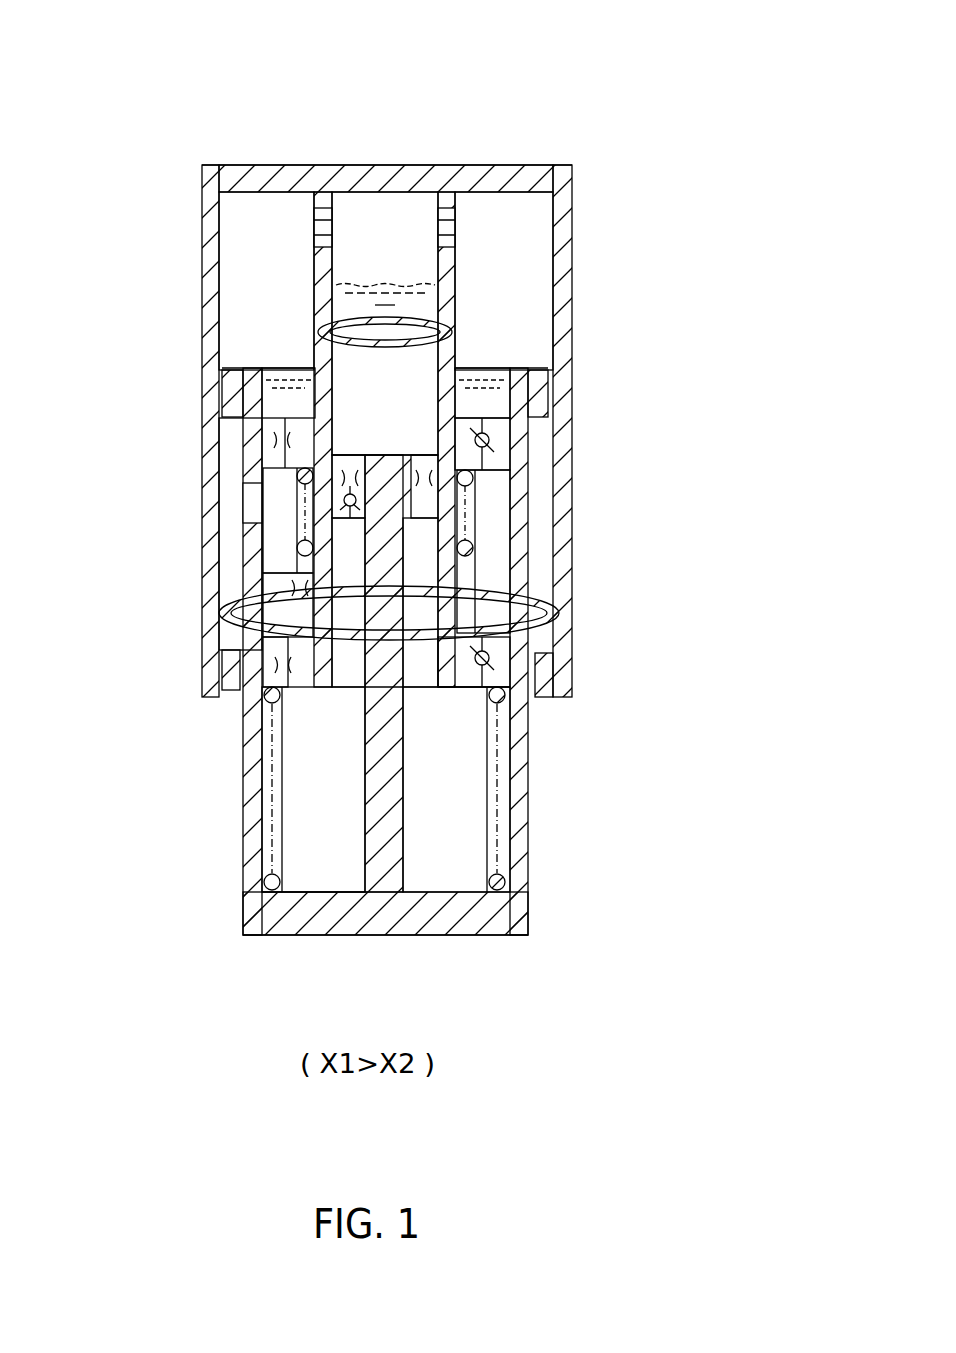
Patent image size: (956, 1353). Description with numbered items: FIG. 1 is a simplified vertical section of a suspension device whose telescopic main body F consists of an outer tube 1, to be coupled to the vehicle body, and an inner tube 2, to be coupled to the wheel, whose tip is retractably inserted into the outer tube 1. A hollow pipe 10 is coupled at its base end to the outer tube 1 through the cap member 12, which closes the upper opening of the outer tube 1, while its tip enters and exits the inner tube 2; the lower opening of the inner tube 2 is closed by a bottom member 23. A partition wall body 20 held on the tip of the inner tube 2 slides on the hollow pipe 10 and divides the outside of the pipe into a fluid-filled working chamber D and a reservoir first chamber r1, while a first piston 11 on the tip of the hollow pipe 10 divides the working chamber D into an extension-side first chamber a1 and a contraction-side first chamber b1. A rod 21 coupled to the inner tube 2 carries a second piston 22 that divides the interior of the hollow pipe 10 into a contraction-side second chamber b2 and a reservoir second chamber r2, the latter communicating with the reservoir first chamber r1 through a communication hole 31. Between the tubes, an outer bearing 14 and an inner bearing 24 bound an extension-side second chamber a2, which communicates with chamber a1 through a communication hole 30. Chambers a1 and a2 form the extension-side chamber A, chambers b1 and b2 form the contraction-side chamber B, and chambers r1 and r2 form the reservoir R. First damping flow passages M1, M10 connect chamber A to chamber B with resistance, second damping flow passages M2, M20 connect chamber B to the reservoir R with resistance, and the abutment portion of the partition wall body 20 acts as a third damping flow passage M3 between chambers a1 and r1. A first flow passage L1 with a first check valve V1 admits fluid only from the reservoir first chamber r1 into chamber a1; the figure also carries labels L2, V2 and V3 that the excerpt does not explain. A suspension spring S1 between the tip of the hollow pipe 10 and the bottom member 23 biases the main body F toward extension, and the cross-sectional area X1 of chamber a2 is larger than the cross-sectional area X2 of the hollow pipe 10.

The outer tube 1 is at (573, 295).
The inner tube 2 is at (530, 810).
The hollow pipe 10 is at (465, 300).
The first piston 11 is at (465, 690).
The cap member 12 is at (235, 165).
The outer bearing 14 is at (230, 670).
The partition wall body 20 is at (302, 385).
The rod 21 is at (366, 805).
The second piston 22 is at (432, 385).
The bottom member 23 is at (447, 920).
The inner bearing 24 is at (228, 367).
The communication hole 30 is at (253, 500).
The communication hole 31 is at (320, 215).
The reservoir first chamber r1 is at (235, 215).
The reservoir second chamber r2 is at (388, 205).
The reservoir R is at (497, 208).
The suspension device main body F is at (584, 230).
The cross-sectional area of extension-side second chamber X1 is at (555, 612).
The cross-sectional area of hollow pipe X2 is at (337, 325).
The first damping flow passage M1 is at (298, 590).
The second damping flow passage M2 is at (345, 470).
The third damping flow passage M3 is at (268, 440).
The first damping flow passage M10 is at (265, 700).
The second damping flow passage M20 is at (490, 507).
The first check valve V1 is at (490, 435).
The valve V2 is at (490, 665).
The valve V3 is at (354, 493).
The first flow passage L1 is at (492, 460).
The passage L2 is at (512, 700).
The extension-side first chamber a1 is at (275, 540).
The extension-side second chamber a2 is at (228, 452).
The contraction-side first chamber b1 is at (328, 870).
The contraction-side second chamber b2 is at (343, 690).
The extension-side chamber A is at (508, 562).
The contraction-side chamber B is at (470, 855).
The working chamber D is at (270, 613).
The suspension spring S1 is at (265, 885).